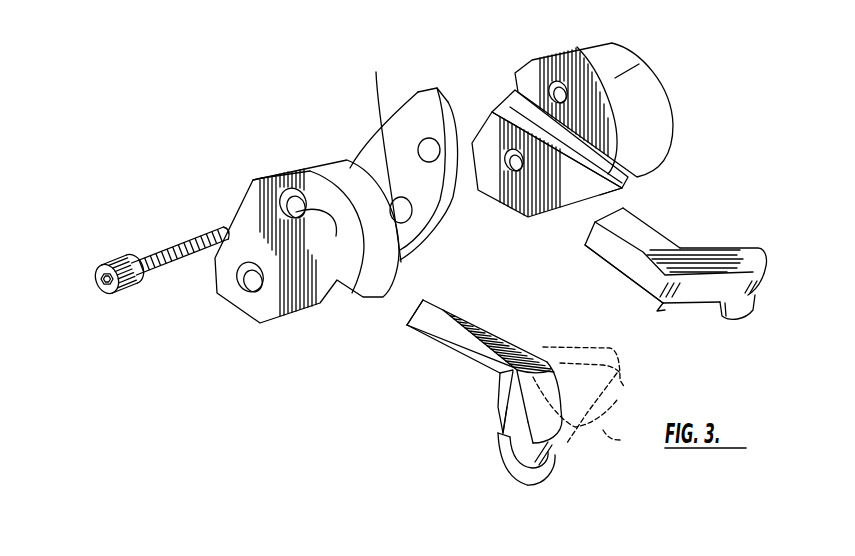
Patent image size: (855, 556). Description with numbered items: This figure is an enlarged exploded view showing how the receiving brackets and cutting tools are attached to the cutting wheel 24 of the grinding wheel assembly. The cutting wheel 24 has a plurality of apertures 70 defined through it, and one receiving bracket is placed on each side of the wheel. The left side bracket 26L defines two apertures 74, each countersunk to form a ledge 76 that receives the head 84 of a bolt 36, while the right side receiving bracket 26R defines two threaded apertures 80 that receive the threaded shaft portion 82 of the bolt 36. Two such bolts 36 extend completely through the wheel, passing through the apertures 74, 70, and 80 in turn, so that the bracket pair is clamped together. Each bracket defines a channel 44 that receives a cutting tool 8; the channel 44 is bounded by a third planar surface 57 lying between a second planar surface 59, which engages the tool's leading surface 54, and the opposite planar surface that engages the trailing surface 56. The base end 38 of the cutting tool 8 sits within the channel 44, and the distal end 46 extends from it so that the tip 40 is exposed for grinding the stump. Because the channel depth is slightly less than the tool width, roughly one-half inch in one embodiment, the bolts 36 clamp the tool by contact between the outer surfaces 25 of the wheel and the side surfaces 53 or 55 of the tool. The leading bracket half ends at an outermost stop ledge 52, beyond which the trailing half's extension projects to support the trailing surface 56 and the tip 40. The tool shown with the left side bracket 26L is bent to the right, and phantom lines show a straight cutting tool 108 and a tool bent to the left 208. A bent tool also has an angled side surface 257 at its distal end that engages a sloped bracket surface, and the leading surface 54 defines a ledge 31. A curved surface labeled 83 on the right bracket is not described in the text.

The cutting tool 8 is at (723, 245).
The cutting wheel 24 is at (438, 229).
The outer surfaces 25 is at (355, 168).
The left side bracket 26L is at (268, 322).
The right side receiving bracket 26R is at (673, 140).
The ledge 31 is at (660, 309).
The bolt 36 is at (152, 277).
The base end 38 is at (642, 212).
The tip 40 is at (750, 317).
The channel 44 is at (527, 110).
The distal end 46 is at (765, 263).
The outermost stop ledge 52 is at (603, 193).
The side surface 53 is at (455, 346).
The leading surface 54 is at (465, 372).
The side surface 55 is at (645, 270).
The trailing surface 56 is at (645, 235).
The third planar surface 57 is at (565, 134).
The second planar surface 59 is at (583, 173).
The apertures 70 is at (372, 165).
The apertures 74 is at (304, 216).
The ledge 76 is at (272, 201).
The threaded apertures 80 is at (542, 84).
The threaded shaft portion 82 is at (177, 263).
The curved surface 83 is at (623, 133).
The head 84 is at (118, 252).
The straight cutting tool 108 is at (610, 420).
The cutting tool bent to the left 208 is at (621, 385).
The side surface 257 is at (512, 422).